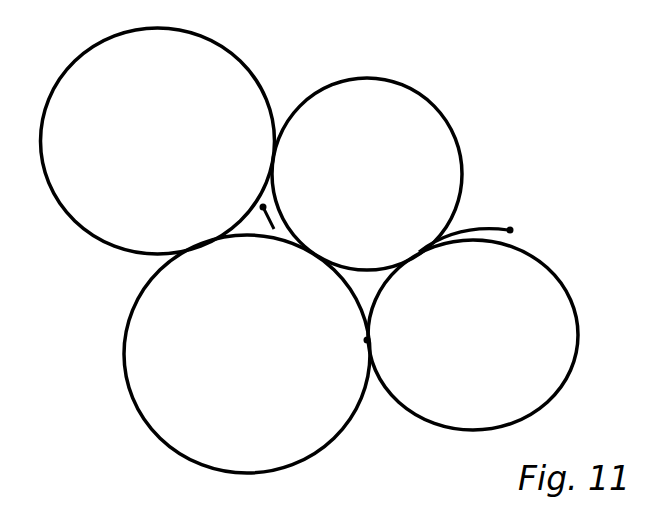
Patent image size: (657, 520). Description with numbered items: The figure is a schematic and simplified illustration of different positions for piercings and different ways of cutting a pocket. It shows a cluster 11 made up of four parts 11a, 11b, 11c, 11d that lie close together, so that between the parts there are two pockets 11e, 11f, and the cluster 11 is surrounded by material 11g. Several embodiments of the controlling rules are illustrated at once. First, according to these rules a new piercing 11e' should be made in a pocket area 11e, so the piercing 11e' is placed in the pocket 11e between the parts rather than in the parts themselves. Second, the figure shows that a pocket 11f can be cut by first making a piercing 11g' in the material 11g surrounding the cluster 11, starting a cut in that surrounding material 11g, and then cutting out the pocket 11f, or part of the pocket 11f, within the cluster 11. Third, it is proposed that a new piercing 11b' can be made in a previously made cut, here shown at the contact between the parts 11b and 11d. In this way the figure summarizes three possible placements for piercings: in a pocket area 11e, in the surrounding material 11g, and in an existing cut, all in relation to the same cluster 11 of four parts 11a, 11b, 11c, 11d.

The cluster 11 is at (325, 261).
The part 11a is at (158, 141).
The part 11b is at (247, 354).
The part 11c is at (367, 174).
The part 11d is at (473, 335).
The pocket 11e is at (144, 242).
The new piercing 11e' is at (276, 113).
The pocket 11f is at (370, 290).
The material surrounding the cluster 11g is at (527, 303).
The piercing 11g' is at (565, 228).
The new piercing 11b' is at (317, 422).